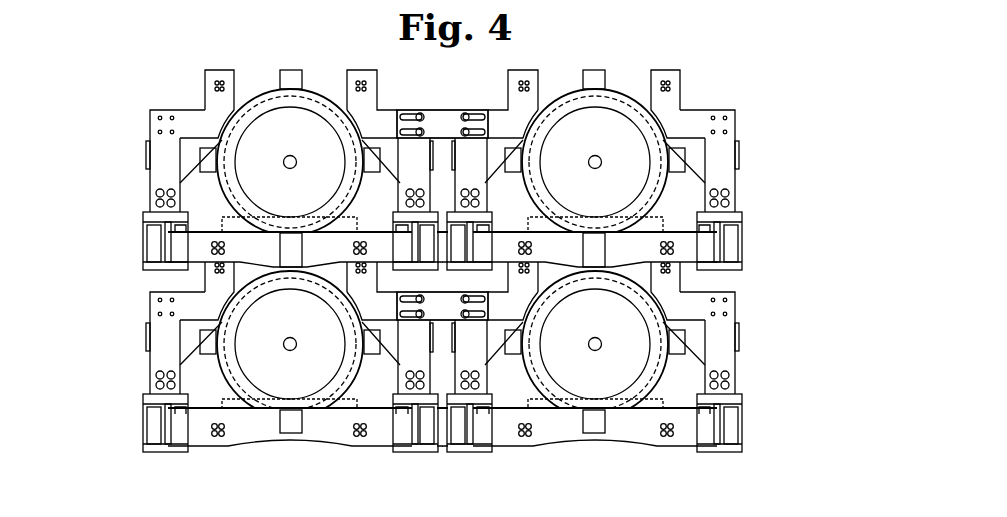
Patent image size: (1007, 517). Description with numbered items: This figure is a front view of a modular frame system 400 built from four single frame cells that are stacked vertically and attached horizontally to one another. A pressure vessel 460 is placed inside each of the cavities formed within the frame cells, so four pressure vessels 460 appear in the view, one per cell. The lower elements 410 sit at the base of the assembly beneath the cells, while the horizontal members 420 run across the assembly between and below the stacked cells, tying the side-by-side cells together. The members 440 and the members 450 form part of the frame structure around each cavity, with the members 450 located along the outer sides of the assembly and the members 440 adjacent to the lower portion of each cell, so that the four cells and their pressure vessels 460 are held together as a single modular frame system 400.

The modular frame system 400 is at (440, 275).
The base feet 410 is at (157, 423).
The cross bars 420 is at (190, 248).
The mounting brackets 440 is at (233, 223).
The side plates 450 is at (157, 322).
The pressure vessel 460 is at (633, 320).